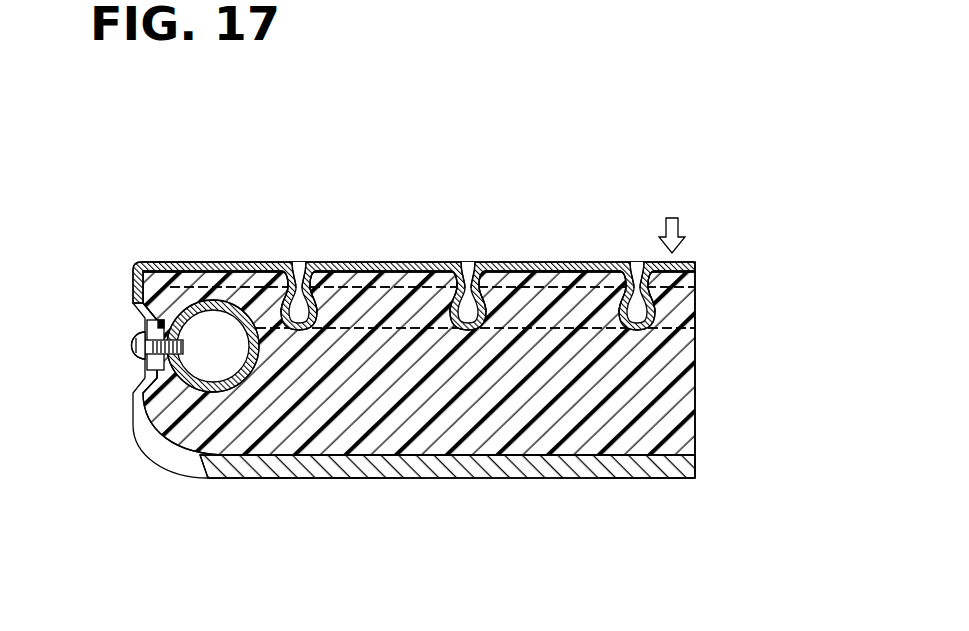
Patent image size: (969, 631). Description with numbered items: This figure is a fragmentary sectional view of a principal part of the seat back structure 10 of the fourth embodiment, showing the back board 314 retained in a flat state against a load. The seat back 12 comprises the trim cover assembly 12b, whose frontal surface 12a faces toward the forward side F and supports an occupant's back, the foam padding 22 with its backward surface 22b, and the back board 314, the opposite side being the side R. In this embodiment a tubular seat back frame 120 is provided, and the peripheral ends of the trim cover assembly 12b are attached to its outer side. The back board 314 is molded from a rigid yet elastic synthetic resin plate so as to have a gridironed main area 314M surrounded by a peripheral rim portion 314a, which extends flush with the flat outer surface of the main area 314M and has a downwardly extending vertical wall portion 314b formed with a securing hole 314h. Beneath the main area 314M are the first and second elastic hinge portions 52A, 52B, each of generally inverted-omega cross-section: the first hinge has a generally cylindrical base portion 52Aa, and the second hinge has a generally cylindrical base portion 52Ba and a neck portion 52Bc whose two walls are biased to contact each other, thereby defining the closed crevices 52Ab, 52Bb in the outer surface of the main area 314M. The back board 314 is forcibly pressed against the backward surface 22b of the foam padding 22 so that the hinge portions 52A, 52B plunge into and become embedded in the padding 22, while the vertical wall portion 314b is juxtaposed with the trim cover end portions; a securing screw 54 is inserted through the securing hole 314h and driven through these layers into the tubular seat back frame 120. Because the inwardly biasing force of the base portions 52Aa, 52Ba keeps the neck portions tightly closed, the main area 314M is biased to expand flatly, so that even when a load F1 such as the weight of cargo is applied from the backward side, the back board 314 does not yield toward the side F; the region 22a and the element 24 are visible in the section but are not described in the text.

The structure of seat back 10 is at (716, 184).
The seat back 12 is at (152, 463).
The frontal surface of trim cover assembly 12a is at (599, 480).
The trim cover assembly 12b is at (694, 464).
The foam padding 22 is at (694, 410).
The bottom surface 22a is at (684, 479).
The backward surface of foam padding 22b is at (558, 262).
The bottom plate 24 is at (273, 472).
The first elastic hinge portion 52A is at (399, 338).
The generally cylindrical base portion 52Aa is at (699, 331).
The crevice 52Ab is at (697, 276).
The second elastic hinge portion 52B is at (313, 337).
The generally cylindrical base portion 52Ba is at (314, 268).
The crevice 52Bb is at (301, 262).
The neck portion 52Bc is at (286, 268).
The securing screw 54 is at (132, 354).
The tubular seat back frame 120 is at (206, 300).
The back board 314 is at (356, 145).
The gridironed main area 314M is at (405, 186).
The peripheral rim portion 314a is at (179, 262).
The vertical wall portion 314b is at (142, 314).
The securing hole 314h is at (134, 343).
The force or load F1 is at (671, 219).
The rear direction R is at (494, 107).
The forward side F is at (411, 614).